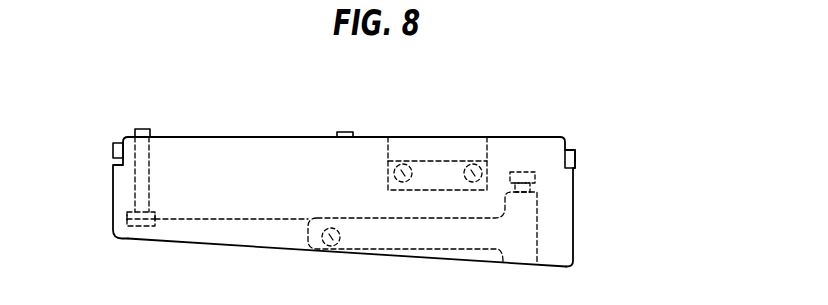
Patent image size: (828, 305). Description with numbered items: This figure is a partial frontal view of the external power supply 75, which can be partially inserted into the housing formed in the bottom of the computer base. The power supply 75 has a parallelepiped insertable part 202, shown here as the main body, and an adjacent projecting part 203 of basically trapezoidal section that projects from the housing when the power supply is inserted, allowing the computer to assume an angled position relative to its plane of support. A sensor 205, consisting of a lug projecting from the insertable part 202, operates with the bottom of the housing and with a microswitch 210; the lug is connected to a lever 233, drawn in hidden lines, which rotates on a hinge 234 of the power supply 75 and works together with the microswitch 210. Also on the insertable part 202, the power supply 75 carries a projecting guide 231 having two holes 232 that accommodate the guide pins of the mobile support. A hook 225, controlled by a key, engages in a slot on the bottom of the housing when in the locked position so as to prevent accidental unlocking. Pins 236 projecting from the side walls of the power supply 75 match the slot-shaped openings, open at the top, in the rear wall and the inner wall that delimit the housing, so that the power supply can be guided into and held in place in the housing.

The external power supply 75 is at (573, 208).
The insertable part 202 is at (240, 150).
The projecting part 203 is at (200, 230).
The sensor 205 is at (142, 129).
The microswitch 210 is at (527, 177).
The hook 225 is at (343, 132).
The projecting guide 231 is at (432, 170).
The holes 232 is at (475, 165).
The lever 233 is at (278, 220).
The hinge 234 is at (331, 246).
The pin 236 is at (110, 151).